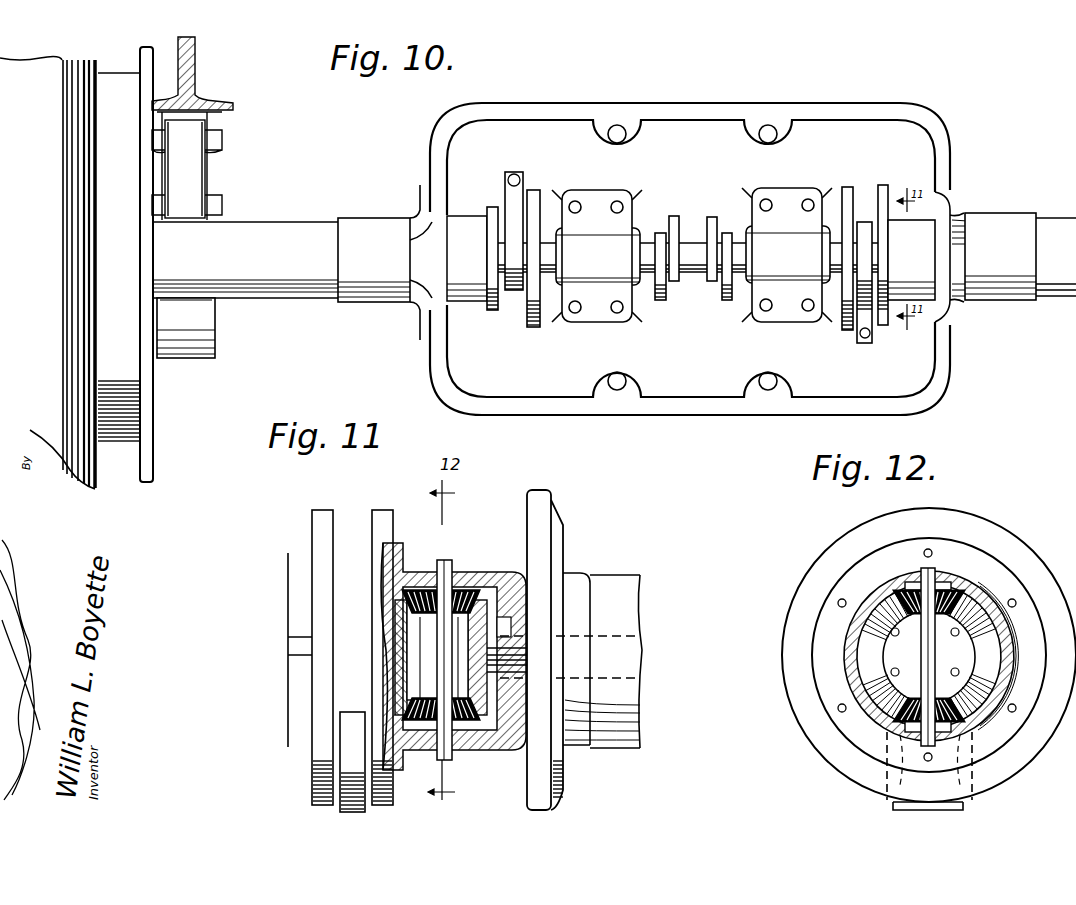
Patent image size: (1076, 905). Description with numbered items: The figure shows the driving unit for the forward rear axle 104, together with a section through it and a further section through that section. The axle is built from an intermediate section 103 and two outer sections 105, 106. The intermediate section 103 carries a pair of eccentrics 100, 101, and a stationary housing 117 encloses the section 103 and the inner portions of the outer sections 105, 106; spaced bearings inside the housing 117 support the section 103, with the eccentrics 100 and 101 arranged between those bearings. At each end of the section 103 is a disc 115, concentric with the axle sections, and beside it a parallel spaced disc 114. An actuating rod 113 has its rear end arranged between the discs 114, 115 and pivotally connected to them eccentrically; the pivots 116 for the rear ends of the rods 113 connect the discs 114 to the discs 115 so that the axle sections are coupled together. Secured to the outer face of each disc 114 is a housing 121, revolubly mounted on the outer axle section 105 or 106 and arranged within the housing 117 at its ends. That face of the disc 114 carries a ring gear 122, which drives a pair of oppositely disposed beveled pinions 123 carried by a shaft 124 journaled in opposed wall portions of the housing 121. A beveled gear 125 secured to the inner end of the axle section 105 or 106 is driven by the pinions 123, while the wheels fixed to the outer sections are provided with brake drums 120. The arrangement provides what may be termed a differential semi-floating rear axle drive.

In FIG. 10, the eccentric 100 is at (662, 232).
In FIG. 10, the eccentric 101 is at (727, 232).
In FIG. 10, the intermediate section 103 is at (662, 282).
In FIG. 10, the forward rear axle 104 is at (985, 230).
In FIG. 11, the outer section 105 is at (625, 665).
In FIG. 11, the outer section 106 is at (290, 662).
In FIG. 10, the actuating rod 113 is at (517, 262).
In FIG. 11, the actuating rod 113 is at (348, 776).
In FIG. 12, the actuating rod 113 is at (893, 790).
In FIG. 10, the disc 114 is at (500, 205).
In FIG. 11, the disc 114 is at (385, 516).
In FIG. 12, the disc 114 is at (962, 520).
In FIG. 10, the disc 115 is at (536, 195).
In FIG. 10, the pivot 116 is at (523, 267).
In FIG. 10, the stationary housing 117 is at (830, 405).
In FIG. 11, the stationary housing 117 is at (545, 556).
In FIG. 10, the brake drum 120 is at (600, 292).
In FIG. 11, the housing 121 is at (500, 574).
In FIG. 12, the housing 121 is at (858, 693).
In FIG. 11, the ring gear 122 is at (425, 688).
In FIG. 12, the ring gear 122 is at (862, 655).
In FIG. 11, the beveled pinion 123 is at (560, 699).
In FIG. 12, the beveled pinion 123 is at (895, 598).
In FIG. 11, the shaft 124 is at (450, 570).
In FIG. 12, the shaft 124 is at (920, 568).
In FIG. 11, the beveled gear 125 is at (540, 655).